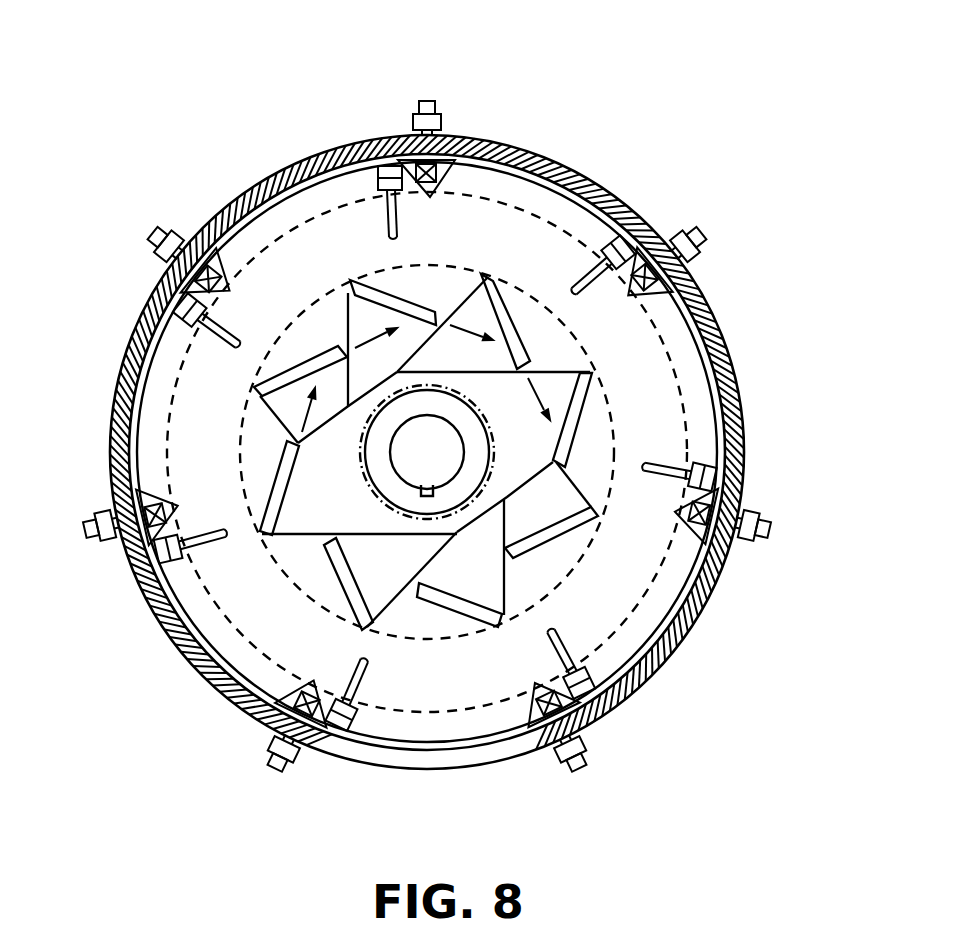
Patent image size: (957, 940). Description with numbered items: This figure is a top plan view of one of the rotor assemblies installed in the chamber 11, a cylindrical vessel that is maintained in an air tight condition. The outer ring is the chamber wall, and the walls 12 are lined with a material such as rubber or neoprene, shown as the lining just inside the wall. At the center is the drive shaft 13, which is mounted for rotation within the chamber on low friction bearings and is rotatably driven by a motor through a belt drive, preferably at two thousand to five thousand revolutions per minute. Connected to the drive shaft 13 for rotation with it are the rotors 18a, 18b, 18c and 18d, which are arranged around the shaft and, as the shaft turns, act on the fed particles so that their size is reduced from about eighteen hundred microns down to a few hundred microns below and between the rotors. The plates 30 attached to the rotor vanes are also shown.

The chamber 11 is at (725, 367).
The walls 12 is at (705, 447).
The drive shaft 13 is at (408, 478).
The rotor 18a is at (308, 503).
The rotor 18b is at (470, 292).
The rotor 18c is at (366, 302).
The rotor 18d is at (293, 380).
The plate 30 is at (515, 322).